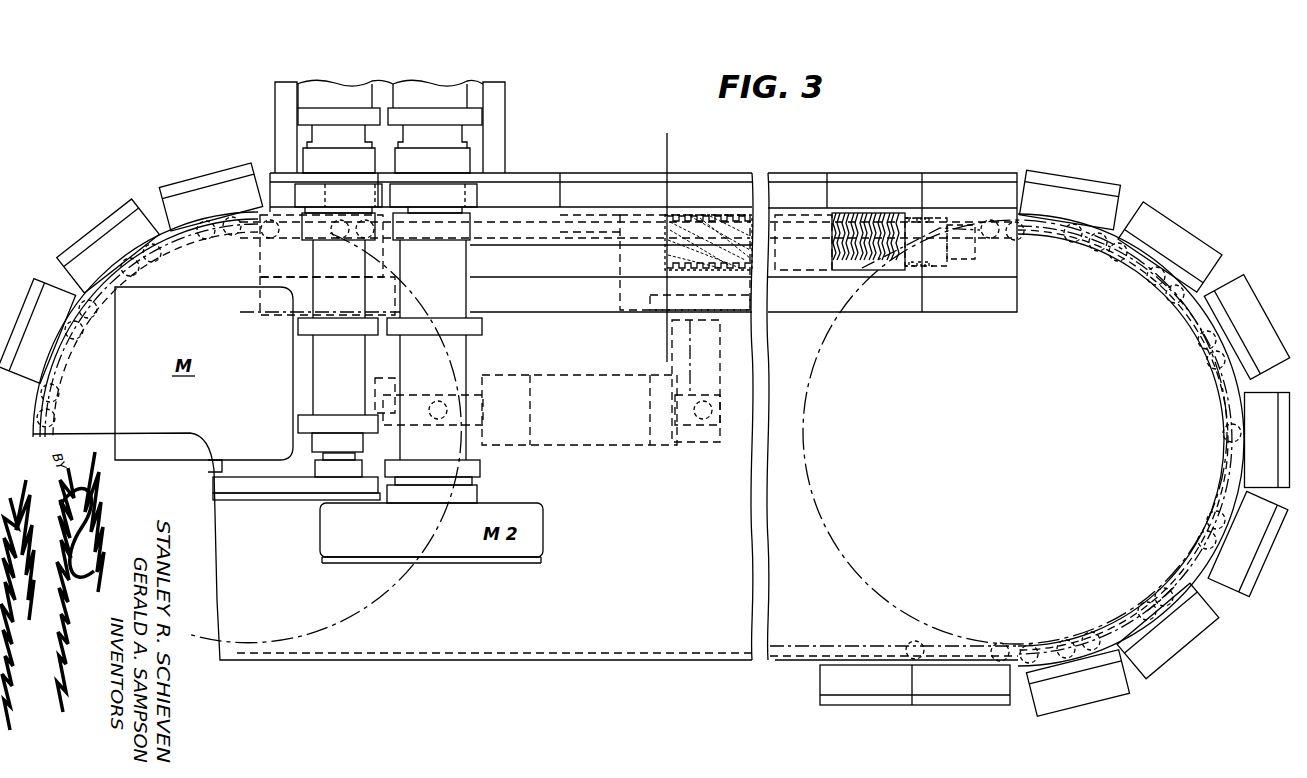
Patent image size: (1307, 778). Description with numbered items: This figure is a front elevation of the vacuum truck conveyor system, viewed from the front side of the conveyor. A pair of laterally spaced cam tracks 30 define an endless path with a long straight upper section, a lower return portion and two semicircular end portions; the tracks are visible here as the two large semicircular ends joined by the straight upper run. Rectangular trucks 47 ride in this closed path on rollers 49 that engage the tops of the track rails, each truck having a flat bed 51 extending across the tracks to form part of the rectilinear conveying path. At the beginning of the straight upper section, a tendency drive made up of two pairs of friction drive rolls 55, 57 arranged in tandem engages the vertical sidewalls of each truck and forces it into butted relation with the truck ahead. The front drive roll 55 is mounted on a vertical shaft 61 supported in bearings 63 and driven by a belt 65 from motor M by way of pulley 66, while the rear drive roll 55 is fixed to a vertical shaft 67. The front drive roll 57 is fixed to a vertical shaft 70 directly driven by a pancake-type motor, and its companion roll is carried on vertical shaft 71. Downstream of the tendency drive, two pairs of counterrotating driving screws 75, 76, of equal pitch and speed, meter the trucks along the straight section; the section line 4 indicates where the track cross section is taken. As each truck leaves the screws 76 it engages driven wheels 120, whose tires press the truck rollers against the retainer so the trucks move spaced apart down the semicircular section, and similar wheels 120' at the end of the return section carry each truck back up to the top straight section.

The section line 4- 4 is at (666, 138).
The cam tracks 30 is at (1164, 589).
The trucks 47 is at (1179, 208).
The rollers 49 is at (1165, 302).
The truck bed 51 is at (832, 182).
The friction drive rolls 55 is at (305, 195).
The friction drive rolls 57 is at (468, 195).
The vertical shaft 61 is at (322, 446).
The bearings 63 is at (318, 232).
The belt 65 is at (283, 486).
The pulley 66 is at (318, 499).
The vertical shaft 67 is at (338, 100).
The vertical shaft 70 is at (462, 362).
The vertical shaft 71 is at (440, 100).
The driving screws 75 is at (700, 215).
The driving screws 76 is at (870, 214).
The driven wheels 120 is at (1015, 432).
The driven wheels 120' is at (324, 438).